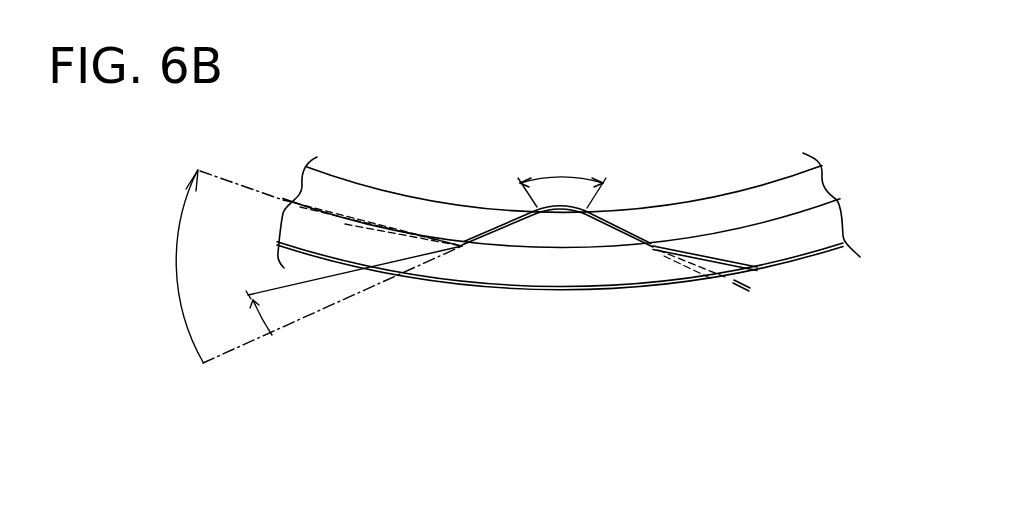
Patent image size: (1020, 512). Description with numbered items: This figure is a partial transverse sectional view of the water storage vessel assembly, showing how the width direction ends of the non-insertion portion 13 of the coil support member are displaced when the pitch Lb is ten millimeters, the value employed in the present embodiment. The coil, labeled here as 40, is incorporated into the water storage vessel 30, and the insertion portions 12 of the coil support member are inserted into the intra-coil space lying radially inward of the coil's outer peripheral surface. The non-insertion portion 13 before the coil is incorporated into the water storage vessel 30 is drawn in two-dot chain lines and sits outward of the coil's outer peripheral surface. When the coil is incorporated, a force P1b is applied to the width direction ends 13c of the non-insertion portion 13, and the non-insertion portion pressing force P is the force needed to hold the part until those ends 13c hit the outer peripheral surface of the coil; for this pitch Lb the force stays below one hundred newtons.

The lens (cover member 4) 40 is at (775, 200).
The water storage vessel 30 is at (567, 290).
The insertion portion 12 is at (613, 238).
The non-insertion portion 13 is at (717, 258).
The width direction end 13c is at (758, 270).
The non-insertion portion pressing force P is at (319, 266).
The force applied to the width direction ends P1b is at (334, 293).
The pitch Lb is at (562, 170).